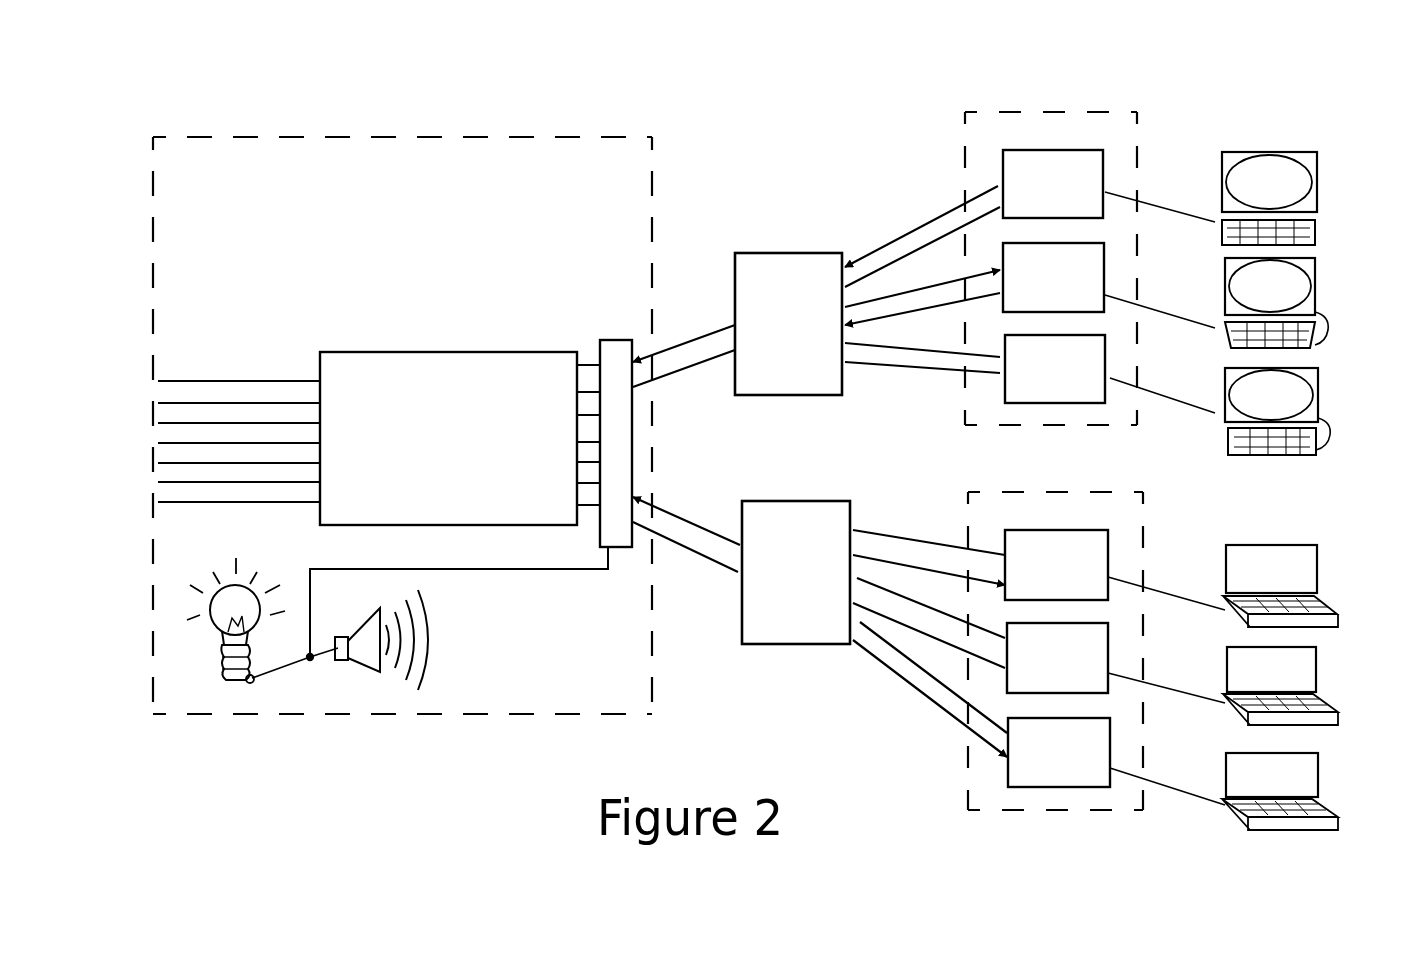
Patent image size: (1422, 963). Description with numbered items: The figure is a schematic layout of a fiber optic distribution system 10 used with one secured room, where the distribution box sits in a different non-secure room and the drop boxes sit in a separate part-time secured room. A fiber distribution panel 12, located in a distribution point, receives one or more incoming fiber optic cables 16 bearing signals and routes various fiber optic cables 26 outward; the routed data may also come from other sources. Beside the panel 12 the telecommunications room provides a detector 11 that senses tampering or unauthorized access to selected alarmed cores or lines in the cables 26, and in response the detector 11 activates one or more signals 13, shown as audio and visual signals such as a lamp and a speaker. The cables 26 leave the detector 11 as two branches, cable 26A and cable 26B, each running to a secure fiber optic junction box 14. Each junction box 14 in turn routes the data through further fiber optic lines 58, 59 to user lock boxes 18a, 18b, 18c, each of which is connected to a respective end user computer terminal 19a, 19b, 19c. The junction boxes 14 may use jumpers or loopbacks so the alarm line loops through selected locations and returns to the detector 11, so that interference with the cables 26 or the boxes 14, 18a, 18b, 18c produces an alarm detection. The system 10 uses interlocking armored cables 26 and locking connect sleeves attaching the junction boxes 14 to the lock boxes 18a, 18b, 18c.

The fiber optic distribution system 10 is at (497, 742).
The detector 11 is at (615, 343).
The fiber distribution panel 12 is at (426, 353).
The signals 13 is at (243, 688).
The secure fiber optic junction box 14 is at (775, 268).
The fiber optic cable 16 is at (202, 390).
The user lock box 18a is at (1038, 157).
The user lock box 18b is at (1082, 290).
The user lock box 18c is at (1048, 390).
The end user computer terminal 19a is at (1313, 174).
The end user computer terminal 19b is at (1315, 282).
The end user computer terminal 19c is at (1318, 380).
The fiber optic cable 26 is at (688, 478).
The fiber optic cable 26A is at (683, 338).
The fiber optic cable 26B is at (693, 550).
The fiber optic cable 58 is at (878, 250).
The fiber optic cable 59 is at (883, 367).